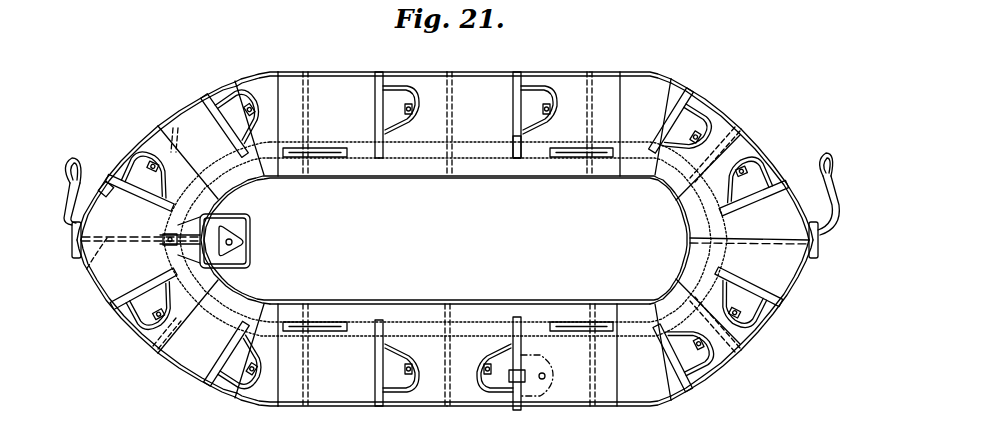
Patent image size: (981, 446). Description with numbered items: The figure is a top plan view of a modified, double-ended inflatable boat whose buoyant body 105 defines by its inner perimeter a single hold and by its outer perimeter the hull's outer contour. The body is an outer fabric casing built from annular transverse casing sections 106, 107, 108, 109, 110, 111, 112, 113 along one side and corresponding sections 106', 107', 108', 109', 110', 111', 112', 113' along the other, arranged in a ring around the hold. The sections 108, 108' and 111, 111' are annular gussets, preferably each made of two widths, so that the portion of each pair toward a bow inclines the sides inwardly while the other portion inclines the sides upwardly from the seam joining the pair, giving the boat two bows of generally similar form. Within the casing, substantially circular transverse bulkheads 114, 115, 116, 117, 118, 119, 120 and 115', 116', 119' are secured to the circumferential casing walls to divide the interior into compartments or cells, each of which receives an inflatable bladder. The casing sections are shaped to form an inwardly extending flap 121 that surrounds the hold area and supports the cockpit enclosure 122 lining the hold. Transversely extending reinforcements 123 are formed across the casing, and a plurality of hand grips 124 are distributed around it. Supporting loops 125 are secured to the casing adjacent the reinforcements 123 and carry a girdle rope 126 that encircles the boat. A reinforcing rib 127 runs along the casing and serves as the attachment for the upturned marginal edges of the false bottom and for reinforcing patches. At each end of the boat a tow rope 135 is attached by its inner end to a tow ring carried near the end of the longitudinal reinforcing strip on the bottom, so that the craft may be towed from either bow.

The buoyant body 105 is at (409, 80).
The annular transverse casing section 106 is at (119, 175).
The annular transverse casing section 107 is at (197, 95).
The annular gusset casing section 108 is at (247, 63).
The annular transverse casing section 109 is at (362, 63).
The annular transverse casing section 110 is at (518, 65).
The annular gusset casing section 111 is at (630, 62).
The annular transverse casing section 112 is at (706, 91).
The annular transverse casing section 113 is at (775, 167).
The annular transverse casing section 106' is at (115, 296).
The annular transverse casing section 107' is at (183, 373).
The annular gusset casing section 108' is at (239, 414).
The annular transverse casing section 109' is at (362, 421).
The annular transverse casing section 110' is at (518, 417).
The annular gusset casing section 111' is at (630, 416).
The annular transverse casing section 112' is at (706, 380).
The annular transverse casing section 113' is at (782, 295).
The transverse bulkhead 114 is at (90, 266).
The transverse bulkhead 115 is at (159, 117).
The transverse bulkhead 115' is at (139, 337).
The transverse bulkhead 116 is at (283, 108).
The transverse bulkhead 116' is at (304, 372).
The transverse bulkhead 117 is at (456, 96).
The transverse bulkhead 118 is at (588, 96).
The transverse bulkhead 119 is at (733, 129).
The transverse bulkhead 119' is at (743, 333).
The transverse bulkhead 120 is at (800, 256).
The inwardly extending flap 121 is at (363, 153).
The cockpit enclosure 122 is at (320, 302).
The transversely extending reinforcement 123 is at (517, 160).
The hand grip 124 is at (580, 157).
The supporting loop 125 is at (515, 407).
The girdle rope 126 is at (442, 408).
The reinforcing rib 127 is at (105, 186).
The tow rope 135 is at (76, 158).